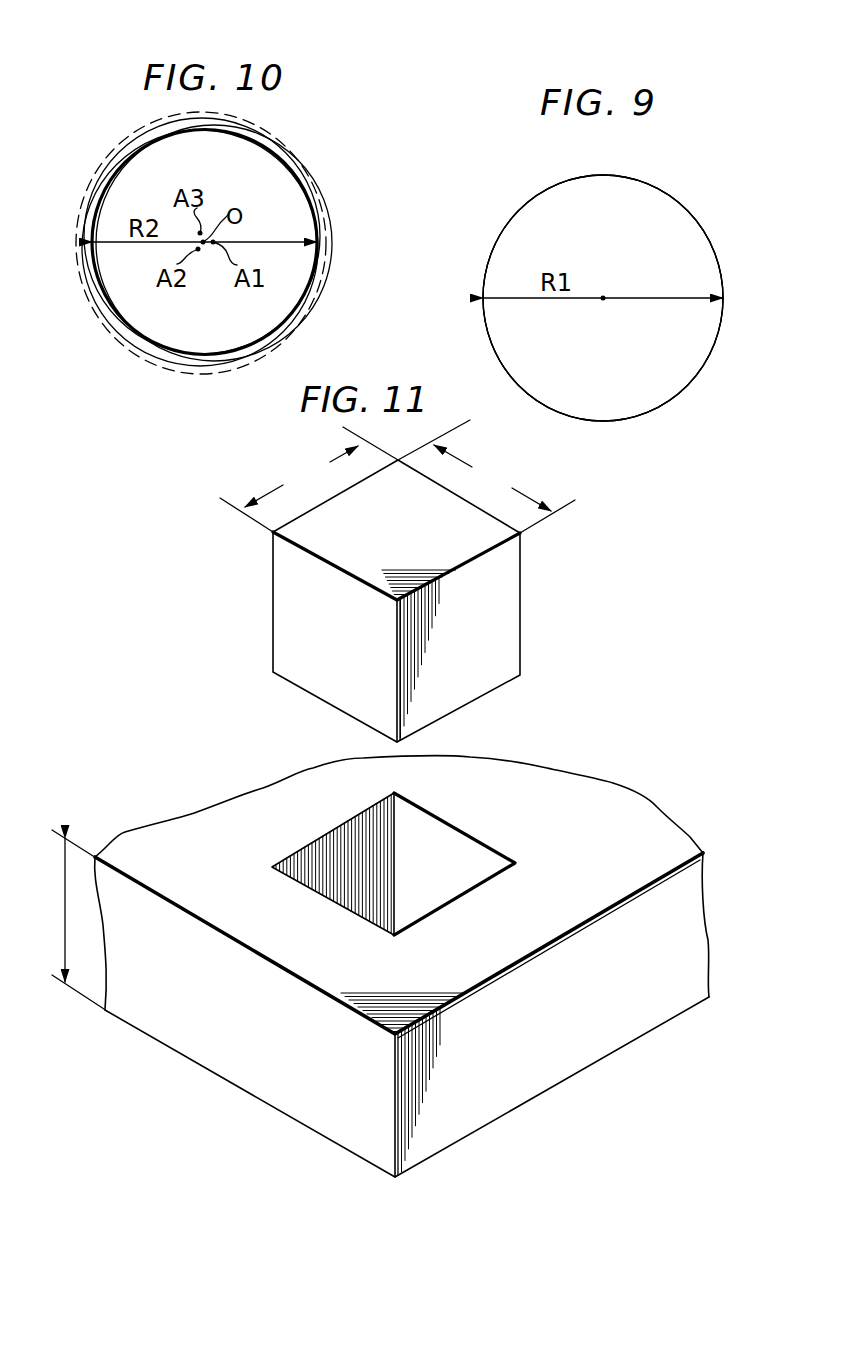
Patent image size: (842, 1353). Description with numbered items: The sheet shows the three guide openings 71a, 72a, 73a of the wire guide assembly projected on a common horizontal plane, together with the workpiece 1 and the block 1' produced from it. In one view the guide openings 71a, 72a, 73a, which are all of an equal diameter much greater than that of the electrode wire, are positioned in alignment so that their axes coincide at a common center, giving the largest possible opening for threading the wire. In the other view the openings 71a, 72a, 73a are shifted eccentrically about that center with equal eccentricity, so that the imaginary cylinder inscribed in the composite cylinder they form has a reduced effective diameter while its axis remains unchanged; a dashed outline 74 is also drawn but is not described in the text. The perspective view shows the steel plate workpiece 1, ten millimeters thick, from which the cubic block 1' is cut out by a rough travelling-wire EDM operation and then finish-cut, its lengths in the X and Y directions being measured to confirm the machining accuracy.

In FIG. 11, the workpiece 1 is at (380, 966).
In FIG. 11, the cubic block 1' is at (400, 581).
In FIG. 10, the guide opening 71a is at (335, 270).
In FIG. 9, the guide opening 71a is at (622, 176).
In FIG. 10, the guide opening 72a is at (185, 125).
In FIG. 9, the guide opening 72a is at (604, 279).
In FIG. 10, the guide opening 73a is at (315, 182).
In FIG. 9, the guide opening 73a is at (627, 279).
In FIG. 10, the dashed envelope circle 74 is at (122, 162).